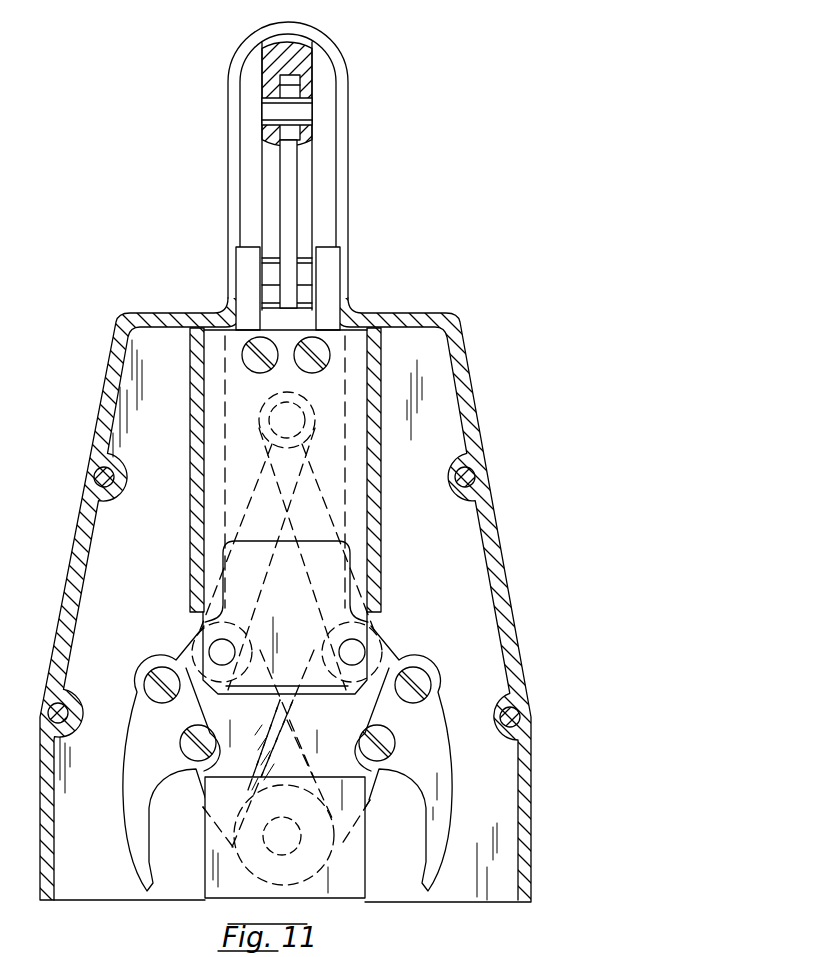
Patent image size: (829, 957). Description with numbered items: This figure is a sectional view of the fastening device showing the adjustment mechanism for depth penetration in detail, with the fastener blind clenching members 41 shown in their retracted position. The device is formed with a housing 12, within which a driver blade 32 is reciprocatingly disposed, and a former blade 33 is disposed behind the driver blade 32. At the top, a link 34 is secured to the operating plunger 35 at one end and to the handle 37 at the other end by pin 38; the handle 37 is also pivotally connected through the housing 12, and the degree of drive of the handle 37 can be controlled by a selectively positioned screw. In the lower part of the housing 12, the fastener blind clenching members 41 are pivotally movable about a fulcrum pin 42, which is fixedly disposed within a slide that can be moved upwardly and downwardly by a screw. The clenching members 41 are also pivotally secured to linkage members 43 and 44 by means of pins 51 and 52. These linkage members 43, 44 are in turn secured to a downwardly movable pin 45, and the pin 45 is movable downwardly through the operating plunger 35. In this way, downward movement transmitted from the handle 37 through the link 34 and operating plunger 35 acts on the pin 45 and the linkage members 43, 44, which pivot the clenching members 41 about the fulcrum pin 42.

The housing 12 is at (513, 650).
The driver blade 32 is at (305, 690).
The former blade 33 is at (304, 545).
The link 34 is at (290, 191).
The operating plunger 35 is at (247, 265).
The handle 37 is at (300, 63).
The pin 38 is at (303, 108).
The fastener blind clenching members 41 is at (133, 812).
The fulcrum pin 42 is at (289, 842).
The linkage member 43 is at (326, 506).
The linkage member 44 is at (246, 497).
The pin 45 is at (263, 435).
The pin 51 is at (356, 652).
The pin 52 is at (205, 636).